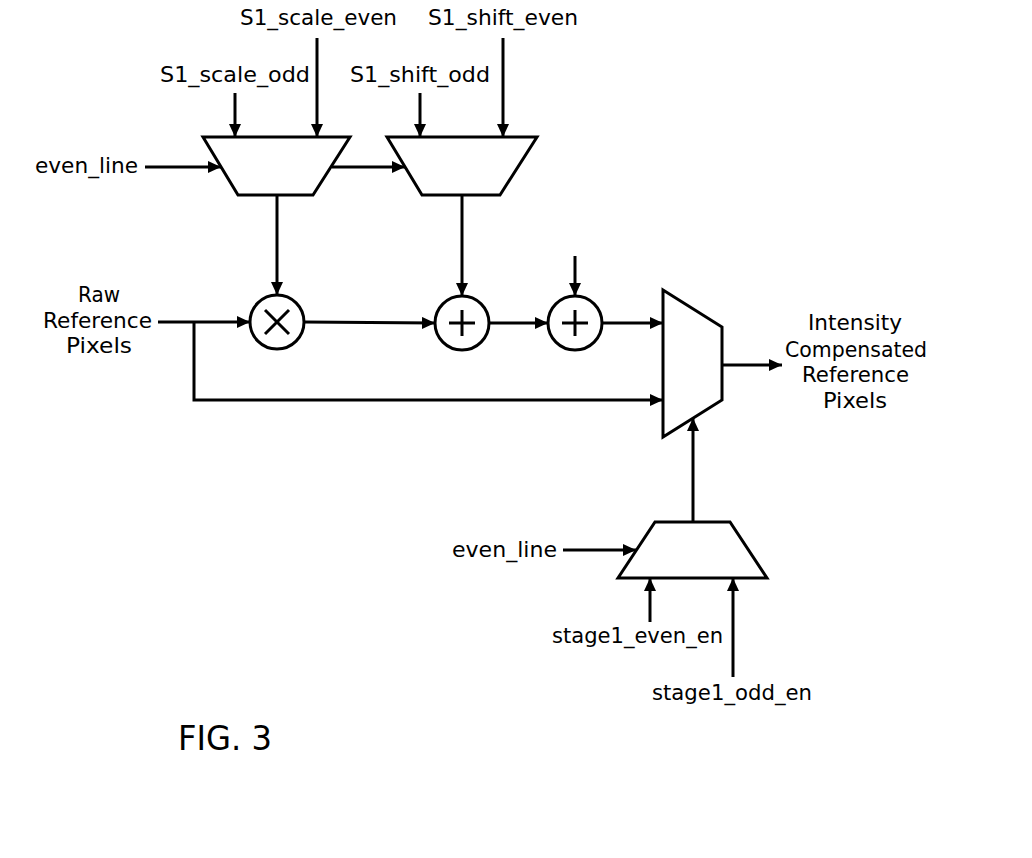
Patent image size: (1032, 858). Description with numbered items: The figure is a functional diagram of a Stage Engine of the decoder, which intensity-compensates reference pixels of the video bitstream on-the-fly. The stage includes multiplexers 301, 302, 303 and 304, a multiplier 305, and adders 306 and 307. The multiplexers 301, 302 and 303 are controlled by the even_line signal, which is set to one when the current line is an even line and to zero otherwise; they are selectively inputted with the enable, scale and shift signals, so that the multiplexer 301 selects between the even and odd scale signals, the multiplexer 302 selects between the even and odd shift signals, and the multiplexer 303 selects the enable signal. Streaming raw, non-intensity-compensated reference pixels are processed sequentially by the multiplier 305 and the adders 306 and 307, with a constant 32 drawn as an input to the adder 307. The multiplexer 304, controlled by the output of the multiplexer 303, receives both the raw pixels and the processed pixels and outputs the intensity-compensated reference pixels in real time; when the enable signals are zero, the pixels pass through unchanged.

The multiplexer 301 is at (246, 198).
The multiplexer 302 is at (488, 198).
The multiplexer 303 is at (712, 521).
The multiplexer 304 is at (693, 304).
The multiplier 305 is at (277, 349).
The adder 306 is at (462, 350).
The adder 307 is at (575, 350).
The rounding constant 32 is at (575, 263).